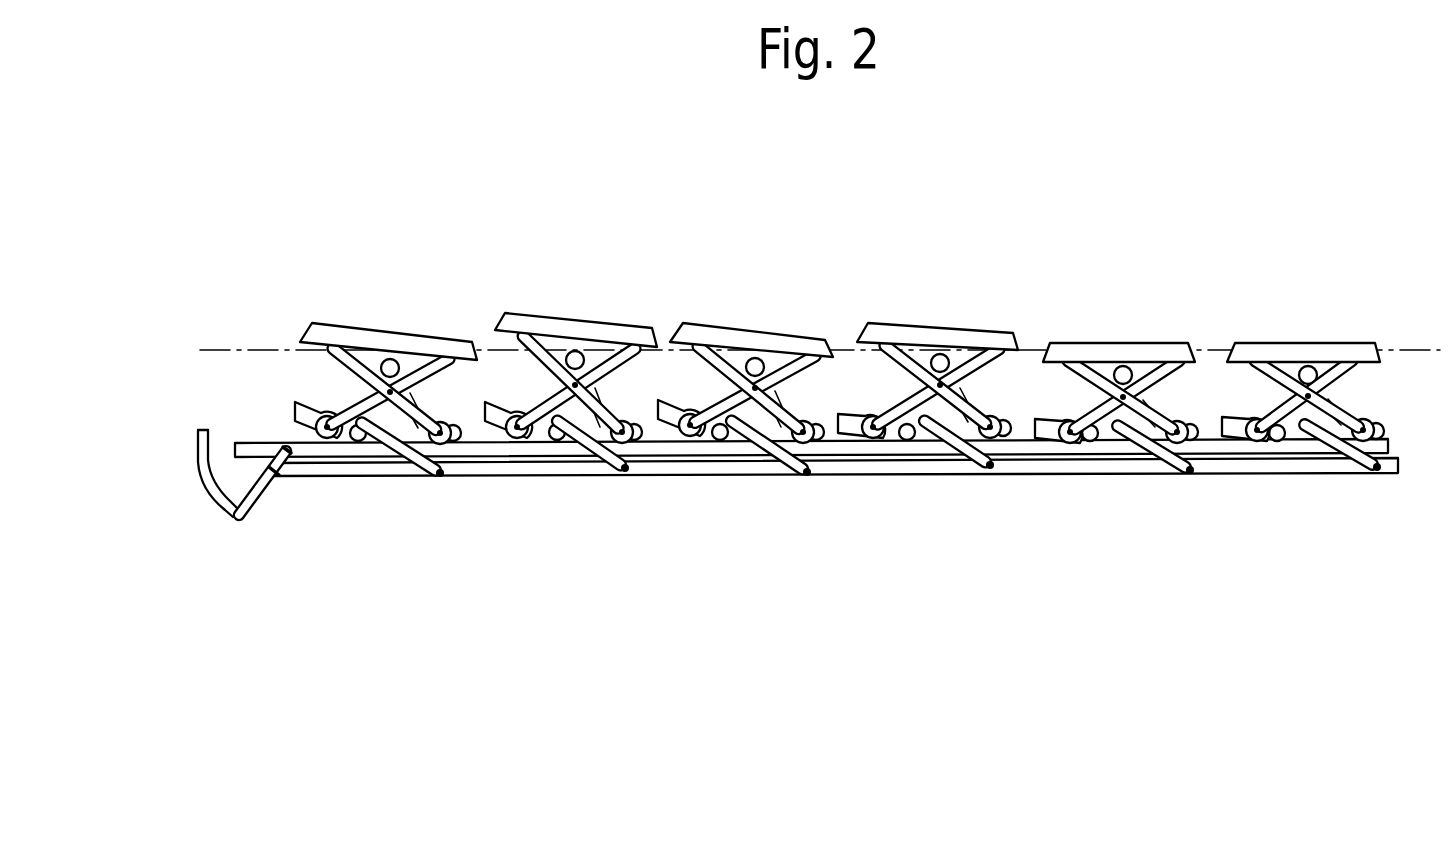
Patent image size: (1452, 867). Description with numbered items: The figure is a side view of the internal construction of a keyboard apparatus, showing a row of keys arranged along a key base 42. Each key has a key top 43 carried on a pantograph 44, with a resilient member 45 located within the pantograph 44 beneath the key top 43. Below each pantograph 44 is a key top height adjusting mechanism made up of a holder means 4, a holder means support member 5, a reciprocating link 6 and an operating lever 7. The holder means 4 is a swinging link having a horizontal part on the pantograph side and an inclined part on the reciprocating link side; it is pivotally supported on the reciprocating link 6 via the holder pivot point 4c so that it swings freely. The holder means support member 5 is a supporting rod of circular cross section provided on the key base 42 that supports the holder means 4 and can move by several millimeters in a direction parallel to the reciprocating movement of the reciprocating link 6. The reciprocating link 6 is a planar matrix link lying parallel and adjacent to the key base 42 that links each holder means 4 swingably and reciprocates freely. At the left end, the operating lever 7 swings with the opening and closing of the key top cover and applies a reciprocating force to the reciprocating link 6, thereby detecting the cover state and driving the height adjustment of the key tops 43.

The holder means 4 is at (380, 441).
The holder pivot point 4c is at (438, 476).
The holder means support member 5 is at (355, 441).
The reciprocating link 6 is at (933, 472).
The operating lever 7 is at (228, 517).
The key base 42 is at (245, 447).
The key top 43 is at (394, 318).
The pantograph 44 is at (344, 380).
The resilient member 45 is at (760, 366).